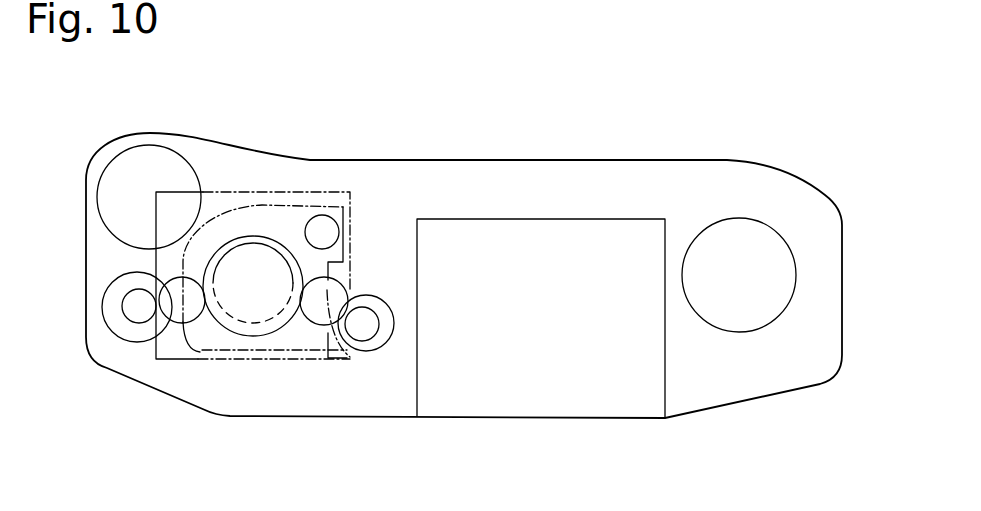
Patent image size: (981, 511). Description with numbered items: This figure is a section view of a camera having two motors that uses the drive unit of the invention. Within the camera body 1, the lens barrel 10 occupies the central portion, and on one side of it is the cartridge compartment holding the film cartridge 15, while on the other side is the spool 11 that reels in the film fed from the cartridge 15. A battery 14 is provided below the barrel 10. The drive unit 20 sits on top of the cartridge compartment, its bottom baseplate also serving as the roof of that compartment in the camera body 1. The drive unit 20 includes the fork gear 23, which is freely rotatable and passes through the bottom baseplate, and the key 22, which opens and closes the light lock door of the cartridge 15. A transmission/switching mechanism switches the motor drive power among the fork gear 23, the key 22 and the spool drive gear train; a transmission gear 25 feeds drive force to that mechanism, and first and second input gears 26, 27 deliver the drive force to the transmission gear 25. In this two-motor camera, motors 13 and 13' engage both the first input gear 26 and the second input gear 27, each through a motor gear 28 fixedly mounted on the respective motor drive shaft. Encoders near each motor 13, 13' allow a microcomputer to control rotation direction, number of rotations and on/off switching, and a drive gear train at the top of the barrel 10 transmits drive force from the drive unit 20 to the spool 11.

The camera body 1 is at (587, 158).
The barrel 10 is at (610, 218).
The spool 11 is at (747, 232).
The motor 13 is at (130, 357).
The motor 13' is at (385, 221).
The battery 14 is at (122, 173).
The cartridge 15 is at (263, 218).
The drive unit 20 is at (205, 203).
The key 22 is at (323, 230).
The fork gear 23 is at (252, 233).
The transmission gear 25 is at (255, 328).
The first input gear 26 is at (325, 277).
The second input gear 27 is at (200, 352).
The motor gear 28 is at (143, 313).